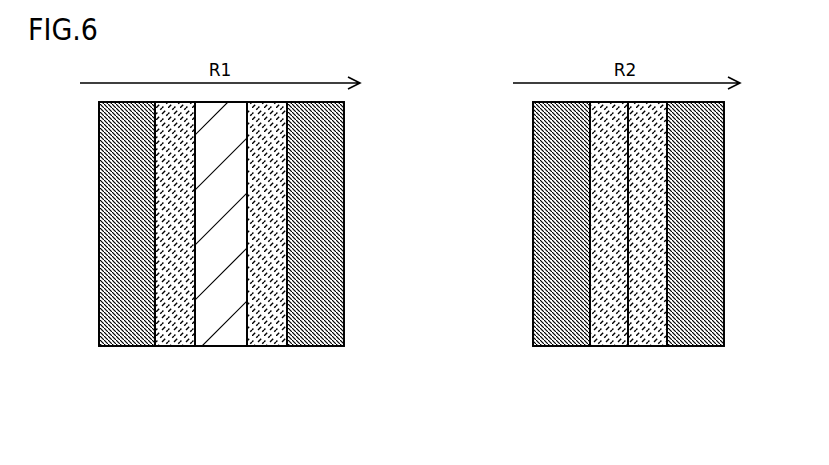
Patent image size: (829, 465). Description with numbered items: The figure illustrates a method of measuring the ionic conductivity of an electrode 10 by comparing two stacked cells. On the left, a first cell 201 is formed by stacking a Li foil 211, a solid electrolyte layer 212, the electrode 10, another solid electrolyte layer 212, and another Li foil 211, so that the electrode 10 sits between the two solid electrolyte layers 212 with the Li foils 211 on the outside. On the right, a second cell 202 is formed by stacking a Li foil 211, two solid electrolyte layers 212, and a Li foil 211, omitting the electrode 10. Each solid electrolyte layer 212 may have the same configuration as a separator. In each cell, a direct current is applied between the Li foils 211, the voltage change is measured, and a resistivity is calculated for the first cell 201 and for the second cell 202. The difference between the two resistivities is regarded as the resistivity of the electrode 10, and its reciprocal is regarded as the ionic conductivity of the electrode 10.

The Li foil 211 is at (120, 347).
The solid electrolyte layer 212 is at (177, 347).
The electrode 10 is at (223, 347).
The first cell 201 is at (352, 393).
The second cell 202 is at (522, 394).